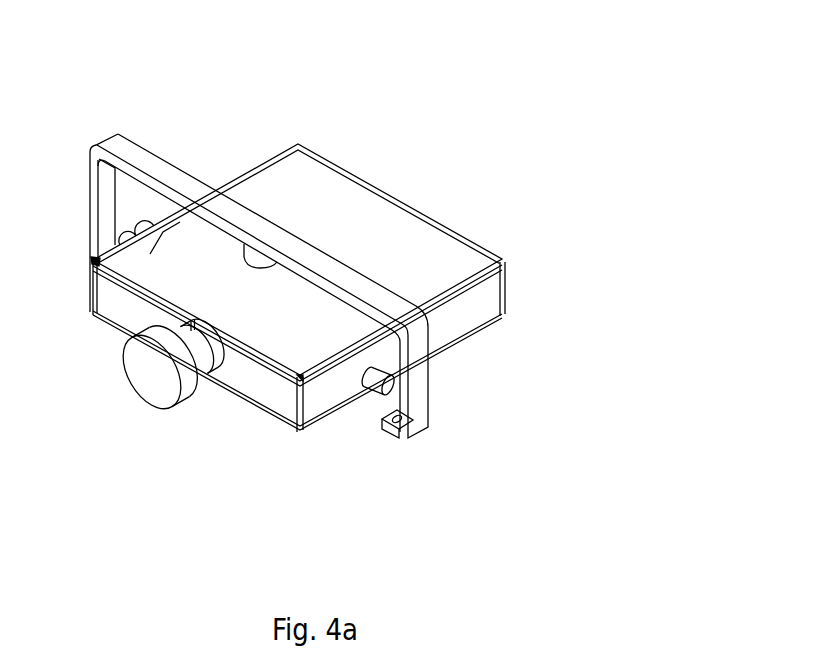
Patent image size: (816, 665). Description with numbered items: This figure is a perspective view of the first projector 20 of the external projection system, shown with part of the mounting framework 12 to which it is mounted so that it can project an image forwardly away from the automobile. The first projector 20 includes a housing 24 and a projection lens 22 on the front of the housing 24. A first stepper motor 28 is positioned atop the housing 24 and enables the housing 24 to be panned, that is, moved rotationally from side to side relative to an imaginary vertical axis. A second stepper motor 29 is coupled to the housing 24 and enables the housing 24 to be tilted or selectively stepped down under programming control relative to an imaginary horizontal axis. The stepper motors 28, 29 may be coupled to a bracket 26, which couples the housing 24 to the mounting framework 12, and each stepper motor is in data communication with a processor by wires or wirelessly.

The first projector 20 is at (298, 78).
The mounting framework 12 is at (137, 155).
The housing 24 is at (420, 227).
The projection lens 22 is at (143, 380).
The bracket 26 is at (92, 262).
The first stepper motor 28 is at (253, 258).
The second stepper motor 29 is at (378, 388).